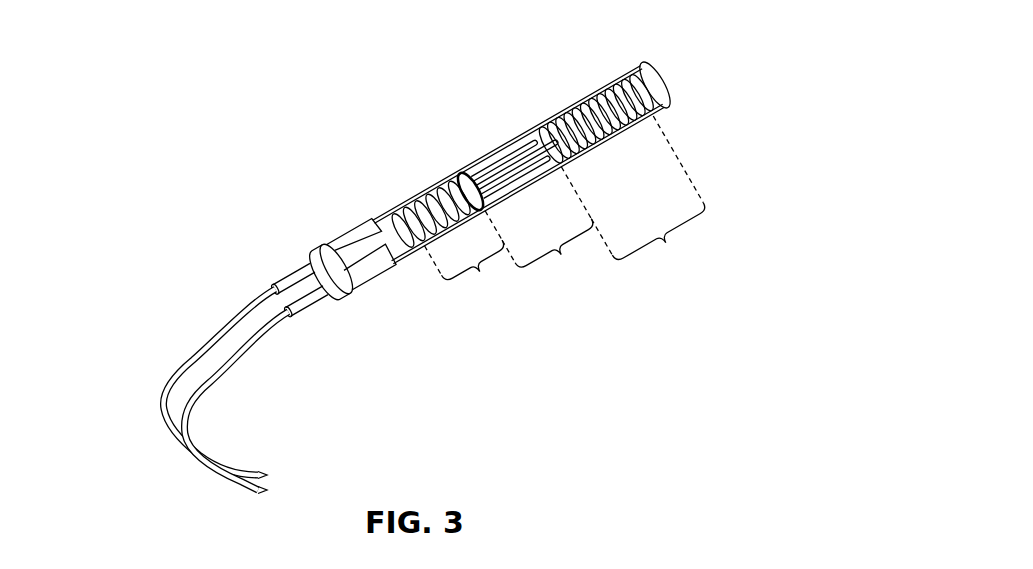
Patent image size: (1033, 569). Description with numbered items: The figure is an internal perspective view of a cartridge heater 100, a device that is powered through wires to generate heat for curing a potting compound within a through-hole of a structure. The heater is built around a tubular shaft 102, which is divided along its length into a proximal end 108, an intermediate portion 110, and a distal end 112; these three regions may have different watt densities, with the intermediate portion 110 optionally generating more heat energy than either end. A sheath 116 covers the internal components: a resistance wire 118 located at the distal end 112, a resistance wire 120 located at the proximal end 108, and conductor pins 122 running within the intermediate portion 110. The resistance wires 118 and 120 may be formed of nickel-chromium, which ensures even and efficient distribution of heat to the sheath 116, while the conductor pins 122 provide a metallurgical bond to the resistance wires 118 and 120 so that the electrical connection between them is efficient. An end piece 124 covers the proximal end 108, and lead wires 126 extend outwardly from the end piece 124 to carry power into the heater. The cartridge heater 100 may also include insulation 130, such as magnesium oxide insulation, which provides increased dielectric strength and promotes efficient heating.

The cartridge heater 100 is at (218, 157).
The tubular shaft 102 is at (381, 277).
The proximal end 108 is at (480, 272).
The intermediate portion 110 is at (561, 255).
The distal end 112 is at (666, 243).
The sheath 116 is at (611, 80).
The resistance wire 118 is at (606, 130).
The resistance wire 120 is at (454, 185).
The conductor pins 122 is at (513, 173).
The end piece 124 is at (312, 258).
The lead wires 126 is at (283, 290).
The insulation 130 is at (427, 187).